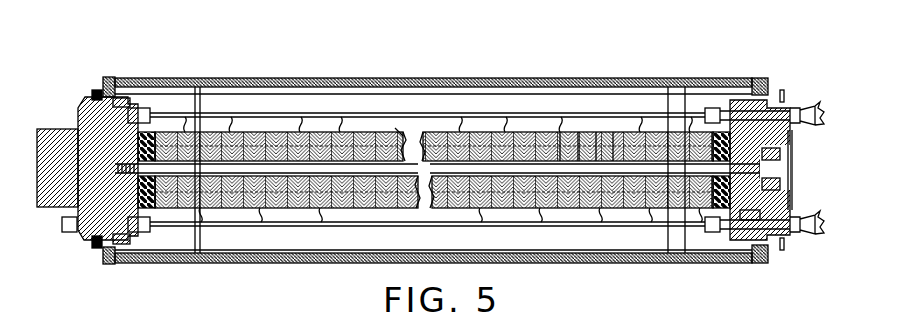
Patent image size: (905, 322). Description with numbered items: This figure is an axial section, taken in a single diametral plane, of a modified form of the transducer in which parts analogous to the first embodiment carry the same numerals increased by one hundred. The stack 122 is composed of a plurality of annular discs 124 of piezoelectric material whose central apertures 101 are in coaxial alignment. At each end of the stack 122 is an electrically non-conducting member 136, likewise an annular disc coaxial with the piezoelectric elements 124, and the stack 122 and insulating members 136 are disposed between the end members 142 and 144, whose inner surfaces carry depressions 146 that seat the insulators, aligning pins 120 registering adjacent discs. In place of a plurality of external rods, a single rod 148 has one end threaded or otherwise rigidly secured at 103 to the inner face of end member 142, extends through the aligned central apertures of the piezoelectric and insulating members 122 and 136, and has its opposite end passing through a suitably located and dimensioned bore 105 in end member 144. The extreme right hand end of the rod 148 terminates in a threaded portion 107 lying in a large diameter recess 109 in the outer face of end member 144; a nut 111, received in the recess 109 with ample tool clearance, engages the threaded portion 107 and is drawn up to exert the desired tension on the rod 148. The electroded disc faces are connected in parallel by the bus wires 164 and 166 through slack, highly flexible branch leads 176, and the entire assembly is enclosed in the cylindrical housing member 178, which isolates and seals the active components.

The central aperture 101 is at (393, 132).
The threaded securing point 103 is at (115, 170).
The bore 105 is at (755, 168).
The threaded portion 107 is at (737, 220).
The recess 109 is at (790, 187).
The nut 111 is at (787, 157).
The aligning pin 120 is at (343, 76).
The stack 122 is at (613, 130).
The annular discs 124 is at (596, 132).
The electrically non-conducting members 136 is at (155, 210).
The end member 142 is at (52, 128).
The end member 144 is at (747, 140).
The depression 146 is at (160, 133).
The rod 148 is at (230, 168).
The bus wire 164 is at (523, 133).
The bus wire 166 is at (413, 223).
The branch leads 176 is at (318, 128).
The housing member 178 is at (440, 117).